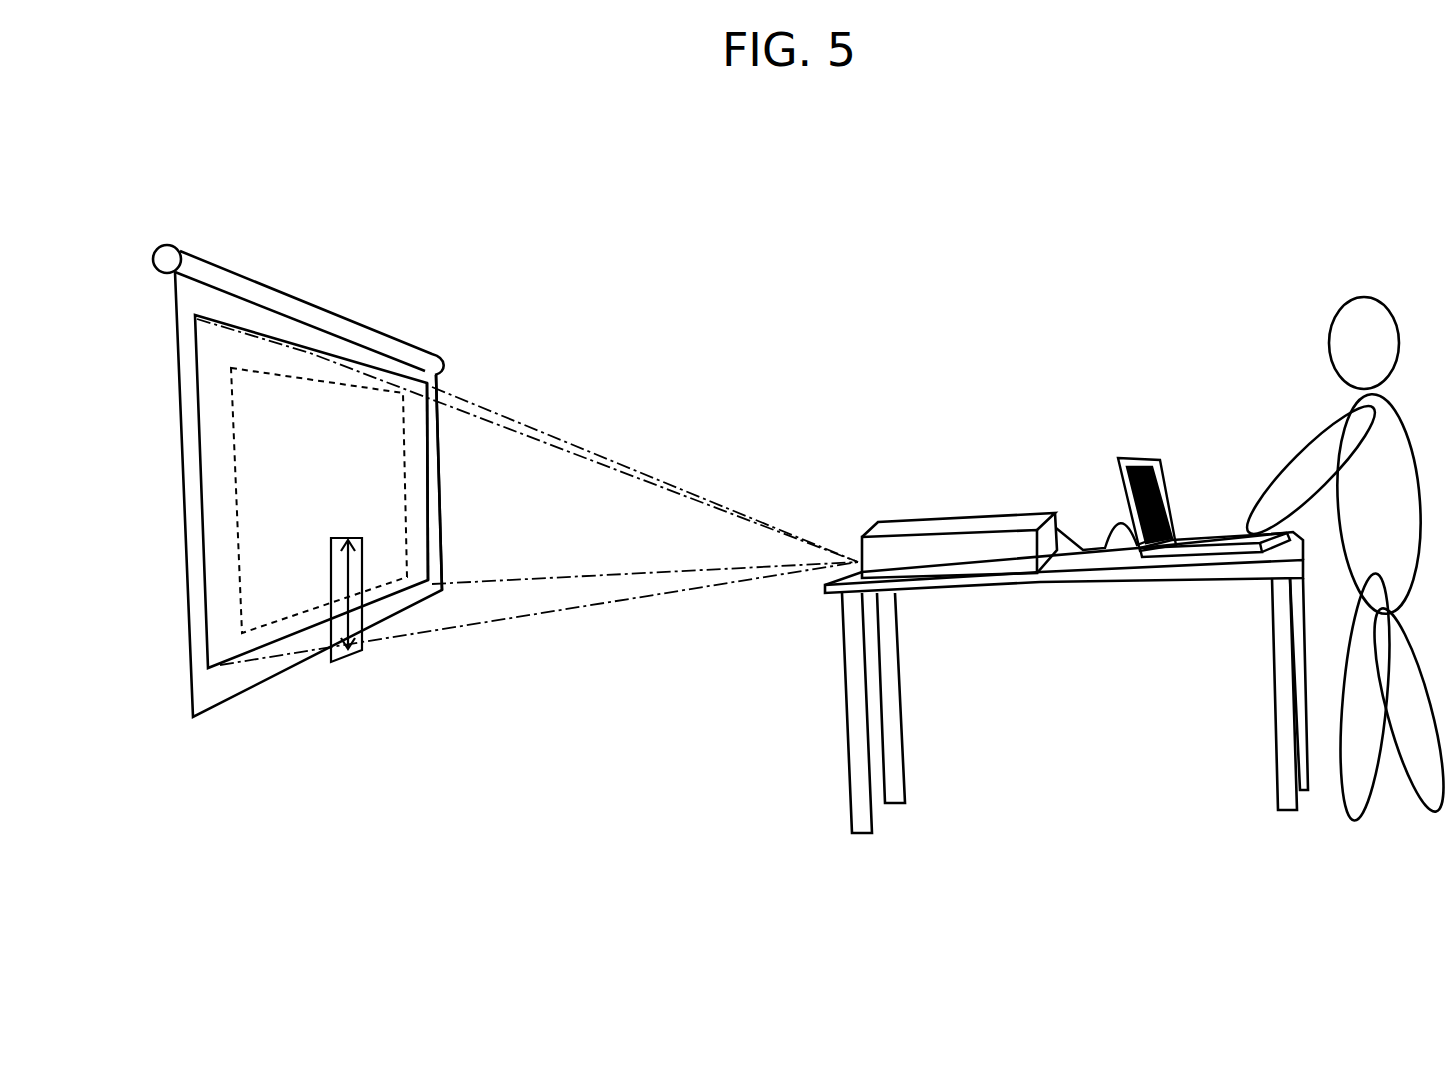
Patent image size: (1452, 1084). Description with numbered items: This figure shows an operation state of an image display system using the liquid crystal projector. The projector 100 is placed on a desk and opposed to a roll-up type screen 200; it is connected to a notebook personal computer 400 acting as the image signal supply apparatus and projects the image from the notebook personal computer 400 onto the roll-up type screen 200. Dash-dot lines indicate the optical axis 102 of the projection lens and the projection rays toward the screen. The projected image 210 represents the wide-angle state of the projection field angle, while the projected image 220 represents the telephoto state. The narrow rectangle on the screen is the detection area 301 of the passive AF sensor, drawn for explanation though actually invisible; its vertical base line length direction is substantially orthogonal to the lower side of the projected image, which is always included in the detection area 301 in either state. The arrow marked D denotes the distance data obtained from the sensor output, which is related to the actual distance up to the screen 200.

The projector 100 is at (960, 543).
The roll-up type screen 200 is at (441, 356).
The projected image 210 is at (428, 507).
The projected image 220 is at (405, 473).
The optical axis 102 is at (393, 588).
The detection area 301 is at (343, 655).
The notebook personal computer 400 is at (1218, 538).
The distance data D is at (352, 605).